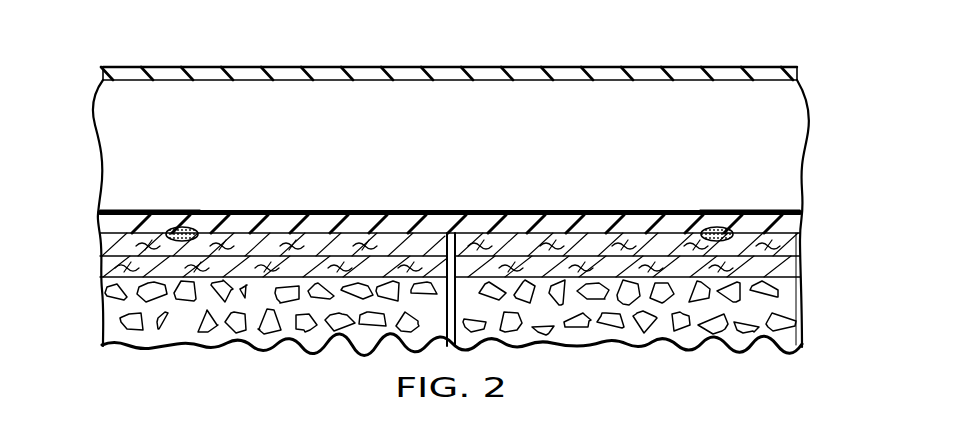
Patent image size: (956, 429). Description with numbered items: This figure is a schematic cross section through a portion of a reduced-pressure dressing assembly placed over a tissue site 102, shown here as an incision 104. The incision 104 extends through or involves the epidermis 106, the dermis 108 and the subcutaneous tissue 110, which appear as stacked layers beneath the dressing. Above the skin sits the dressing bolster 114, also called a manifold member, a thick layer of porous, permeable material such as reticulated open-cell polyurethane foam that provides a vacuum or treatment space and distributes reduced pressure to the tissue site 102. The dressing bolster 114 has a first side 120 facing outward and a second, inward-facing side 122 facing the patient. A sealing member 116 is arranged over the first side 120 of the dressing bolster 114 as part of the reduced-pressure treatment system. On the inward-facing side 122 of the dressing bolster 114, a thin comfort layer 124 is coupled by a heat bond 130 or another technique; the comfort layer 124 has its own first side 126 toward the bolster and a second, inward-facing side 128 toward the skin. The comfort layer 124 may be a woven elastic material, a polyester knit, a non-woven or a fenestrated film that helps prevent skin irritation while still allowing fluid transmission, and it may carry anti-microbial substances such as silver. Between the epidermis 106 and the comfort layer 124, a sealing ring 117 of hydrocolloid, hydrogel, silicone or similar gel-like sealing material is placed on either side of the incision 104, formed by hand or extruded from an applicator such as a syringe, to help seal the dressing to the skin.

The tissue site 102 is at (431, 244).
The incision 104 is at (457, 242).
The epidermis 106 is at (802, 243).
The dermis 108 is at (100, 266).
The subcutaneous tissue 110 is at (101, 310).
The dressing bolster 114 is at (471, 142).
The sealing member 116 is at (563, 67).
The sealing ring 117 is at (177, 228).
The first side 120 is at (140, 80).
The second, inward-facing side 122 is at (767, 205).
The comfort layer 124 is at (804, 222).
The first side 126 is at (117, 220).
The second, inward-facing side 128 is at (103, 237).
The heat bond 130 is at (148, 222).